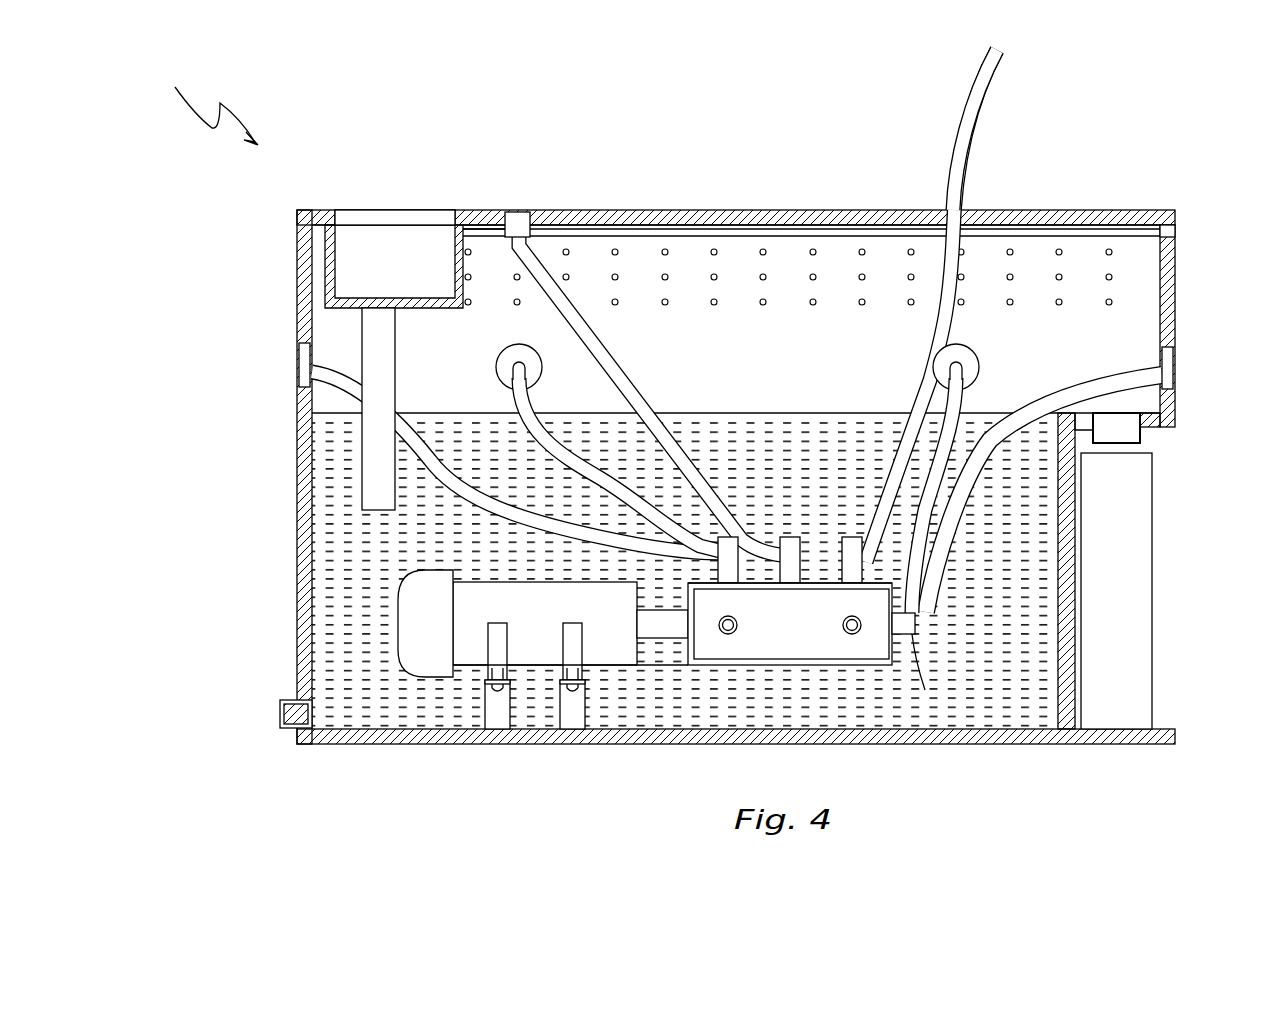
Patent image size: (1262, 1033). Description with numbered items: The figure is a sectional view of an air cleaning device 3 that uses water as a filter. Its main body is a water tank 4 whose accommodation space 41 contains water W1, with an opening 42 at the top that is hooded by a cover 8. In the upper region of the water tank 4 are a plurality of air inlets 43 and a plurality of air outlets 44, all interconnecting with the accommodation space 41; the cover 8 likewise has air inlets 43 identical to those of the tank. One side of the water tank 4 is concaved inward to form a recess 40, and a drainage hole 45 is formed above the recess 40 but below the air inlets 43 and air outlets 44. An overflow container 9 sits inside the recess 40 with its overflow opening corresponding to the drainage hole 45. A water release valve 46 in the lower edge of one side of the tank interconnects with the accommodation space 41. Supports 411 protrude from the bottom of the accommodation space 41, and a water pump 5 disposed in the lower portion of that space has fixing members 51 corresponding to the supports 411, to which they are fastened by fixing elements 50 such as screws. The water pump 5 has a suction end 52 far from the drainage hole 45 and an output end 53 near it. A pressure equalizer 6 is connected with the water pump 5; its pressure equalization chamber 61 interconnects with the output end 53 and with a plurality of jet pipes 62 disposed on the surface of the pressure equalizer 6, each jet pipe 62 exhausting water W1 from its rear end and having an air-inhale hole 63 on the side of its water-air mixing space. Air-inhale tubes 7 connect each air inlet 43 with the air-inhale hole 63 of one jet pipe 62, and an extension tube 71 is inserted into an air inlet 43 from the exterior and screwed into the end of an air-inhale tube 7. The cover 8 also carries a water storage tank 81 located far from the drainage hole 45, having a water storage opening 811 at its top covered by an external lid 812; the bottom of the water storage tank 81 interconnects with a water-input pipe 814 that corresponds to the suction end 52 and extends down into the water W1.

The air cleaning device 3 is at (208, 99).
The water tank 4 is at (305, 560).
The water pump 5 is at (642, 622).
The pressure equalizer 6 is at (795, 665).
The air-inhale tube 7 is at (937, 337).
The cover 8 is at (832, 220).
The overflow container 9 is at (1152, 553).
The recess 40 is at (1072, 690).
The accommodation space 41 is at (695, 245).
The opening 42 is at (1172, 235).
The air inlet 43 is at (520, 222).
The air outlet 44 is at (1113, 302).
The drainage hole 45 is at (1130, 425).
The water release valve 46 is at (295, 700).
The fixing element 50 is at (560, 700).
The fixing member 51 is at (600, 635).
The suction end 52 is at (420, 625).
The output end 53 is at (670, 628).
The pressure equalization chamber 61 is at (858, 665).
The jet pipe 62 is at (920, 650).
The air-inhale hole 63 is at (930, 650).
The extension tube 71 is at (975, 108).
The water storage tank 81 is at (370, 245).
The water storage opening 811 is at (325, 215).
The external lid 812 is at (430, 222).
The water-input pipe 814 is at (375, 440).
The support 411 is at (498, 695).
The water W1 is at (330, 628).